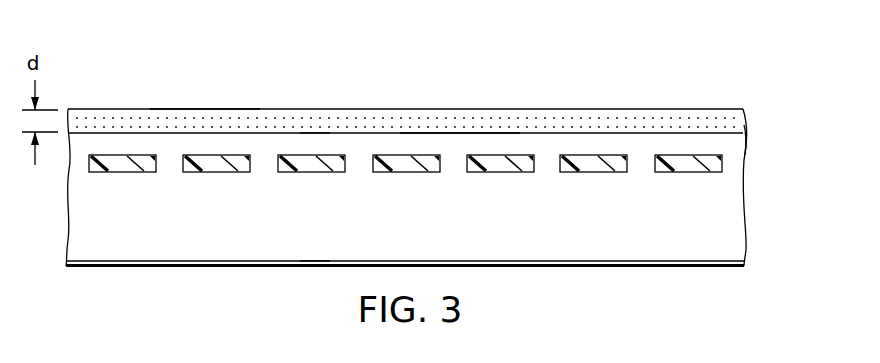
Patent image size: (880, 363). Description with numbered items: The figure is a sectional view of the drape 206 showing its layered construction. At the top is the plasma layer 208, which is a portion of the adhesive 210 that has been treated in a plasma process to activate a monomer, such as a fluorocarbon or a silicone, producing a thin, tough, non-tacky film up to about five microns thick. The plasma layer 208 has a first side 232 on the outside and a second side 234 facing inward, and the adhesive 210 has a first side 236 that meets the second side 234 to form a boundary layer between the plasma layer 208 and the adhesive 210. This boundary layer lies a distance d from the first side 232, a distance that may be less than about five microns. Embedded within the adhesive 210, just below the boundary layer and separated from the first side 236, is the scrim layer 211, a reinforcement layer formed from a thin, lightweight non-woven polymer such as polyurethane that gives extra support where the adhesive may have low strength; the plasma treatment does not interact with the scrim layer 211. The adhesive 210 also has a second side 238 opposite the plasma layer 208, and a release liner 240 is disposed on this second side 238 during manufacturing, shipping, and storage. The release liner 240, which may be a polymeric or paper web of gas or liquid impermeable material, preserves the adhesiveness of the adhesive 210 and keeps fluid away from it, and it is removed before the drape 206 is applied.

The drape 206 is at (599, 83).
The plasma layer 208 is at (325, 120).
The adhesive 210 is at (383, 225).
The scrim layer 211 is at (122, 173).
The first side of the plasma layer 232 is at (210, 109).
The second side of the plasma layer 234 is at (742, 141).
The first side of the adhesive 236 is at (455, 132).
The second side of the adhesive 238 is at (97, 267).
The release liner 240 is at (677, 267).